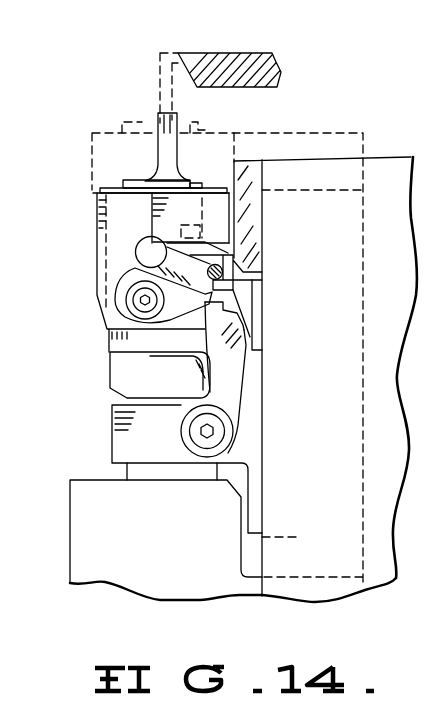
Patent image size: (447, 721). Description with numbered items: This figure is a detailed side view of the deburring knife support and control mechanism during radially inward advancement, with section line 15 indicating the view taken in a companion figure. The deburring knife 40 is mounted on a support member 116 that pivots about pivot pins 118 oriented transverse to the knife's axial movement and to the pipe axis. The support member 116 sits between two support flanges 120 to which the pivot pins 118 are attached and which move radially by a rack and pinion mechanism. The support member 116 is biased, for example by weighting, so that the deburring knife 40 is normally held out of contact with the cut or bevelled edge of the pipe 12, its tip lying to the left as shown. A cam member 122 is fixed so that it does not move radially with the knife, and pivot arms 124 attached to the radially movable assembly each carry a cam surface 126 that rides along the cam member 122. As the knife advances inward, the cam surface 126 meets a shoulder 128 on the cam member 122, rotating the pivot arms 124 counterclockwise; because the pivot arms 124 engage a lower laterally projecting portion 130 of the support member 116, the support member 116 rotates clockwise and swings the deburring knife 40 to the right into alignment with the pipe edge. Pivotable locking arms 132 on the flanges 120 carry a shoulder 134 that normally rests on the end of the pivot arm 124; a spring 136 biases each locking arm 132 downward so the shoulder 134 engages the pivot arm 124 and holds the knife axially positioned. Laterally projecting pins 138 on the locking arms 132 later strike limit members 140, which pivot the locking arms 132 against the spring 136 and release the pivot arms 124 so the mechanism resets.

The pipe 12 is at (245, 53).
The section line 15- 15 is at (42, 22).
The deburring knife 40 is at (180, 113).
The support member 116 is at (108, 237).
The pivot pins 118 is at (136, 257).
The support flanges 120 is at (98, 203).
The cam member 122 is at (257, 248).
The pivot arms 124 is at (233, 397).
The cam surface 126 is at (248, 350).
The shoulder 128 is at (240, 278).
The lower laterally projecting portion 130 is at (115, 375).
The locking arms 132 is at (115, 309).
The shoulder 134 is at (240, 337).
The spring 136 is at (205, 258).
The laterally projecting pins 138 is at (222, 273).
The limit members 140 is at (256, 315).